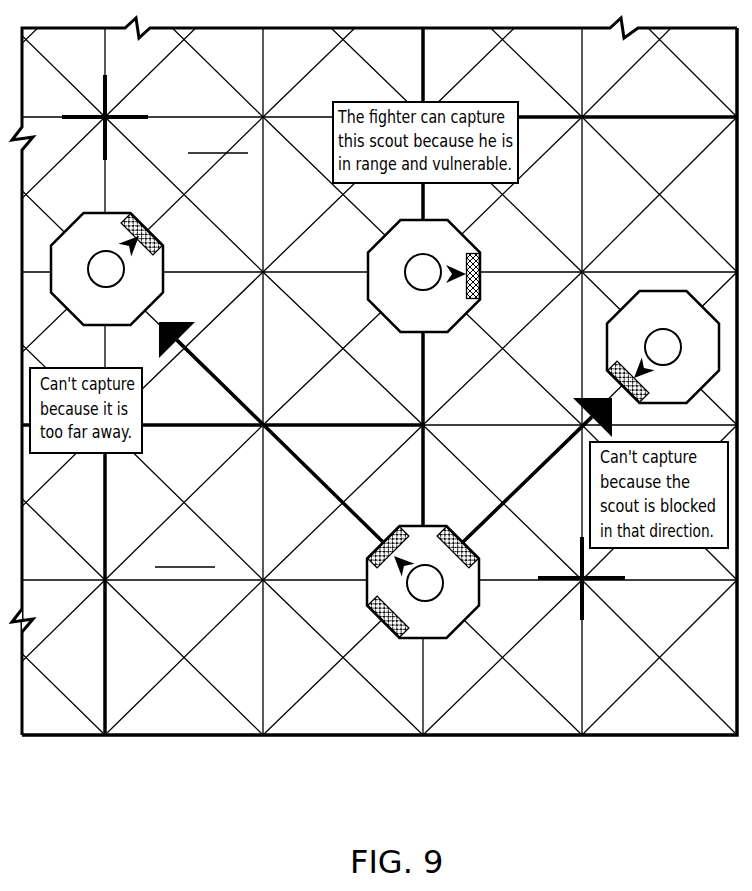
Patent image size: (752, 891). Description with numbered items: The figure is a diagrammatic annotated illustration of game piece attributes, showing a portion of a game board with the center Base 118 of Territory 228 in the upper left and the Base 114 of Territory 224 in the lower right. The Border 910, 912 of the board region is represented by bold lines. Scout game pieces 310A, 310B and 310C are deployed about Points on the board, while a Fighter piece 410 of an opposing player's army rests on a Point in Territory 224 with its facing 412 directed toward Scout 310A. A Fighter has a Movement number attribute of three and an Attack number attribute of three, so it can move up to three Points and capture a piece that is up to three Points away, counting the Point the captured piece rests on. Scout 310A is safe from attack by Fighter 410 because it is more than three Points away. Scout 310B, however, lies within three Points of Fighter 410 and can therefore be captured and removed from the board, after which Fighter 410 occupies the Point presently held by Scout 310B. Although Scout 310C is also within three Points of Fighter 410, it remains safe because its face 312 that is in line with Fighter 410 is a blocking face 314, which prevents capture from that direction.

The Base 114 is at (583, 600).
The center Base 118 is at (118, 115).
The Territory 224 is at (185, 555).
The Territory 228 is at (218, 140).
The Scout game piece 310A is at (106, 213).
The Scout game piece 310B is at (383, 234).
The Scout game piece 310C is at (618, 322).
The face 312 is at (596, 352).
The blocking face 314 is at (583, 381).
The Fighter piece 410 is at (423, 587).
The facing 412 is at (431, 529).
The Border 910 is at (230, 428).
The Border 912 is at (424, 58).